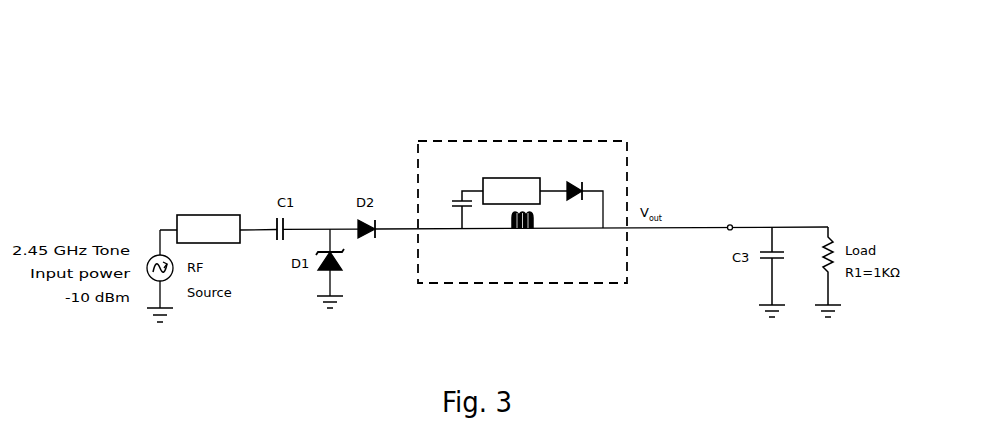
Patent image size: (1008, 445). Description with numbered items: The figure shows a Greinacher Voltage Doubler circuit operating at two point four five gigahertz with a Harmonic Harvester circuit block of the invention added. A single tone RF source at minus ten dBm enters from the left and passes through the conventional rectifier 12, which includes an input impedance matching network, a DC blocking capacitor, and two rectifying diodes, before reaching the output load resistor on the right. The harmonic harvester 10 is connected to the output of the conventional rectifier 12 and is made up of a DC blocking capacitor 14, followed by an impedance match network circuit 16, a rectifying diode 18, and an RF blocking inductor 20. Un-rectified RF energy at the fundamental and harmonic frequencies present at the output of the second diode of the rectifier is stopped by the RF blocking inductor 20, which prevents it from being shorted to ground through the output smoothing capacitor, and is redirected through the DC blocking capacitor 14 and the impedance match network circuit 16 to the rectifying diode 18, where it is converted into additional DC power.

The harmonic harvester 10 is at (332, 120).
The conventional rectifier 12 is at (345, 187).
The DC blocking capacitor C2 14 is at (450, 185).
The impedance match network circuit 16 is at (530, 163).
The rectifying diode D3 18 is at (573, 213).
The RF blocking inductor L1 20 is at (492, 258).